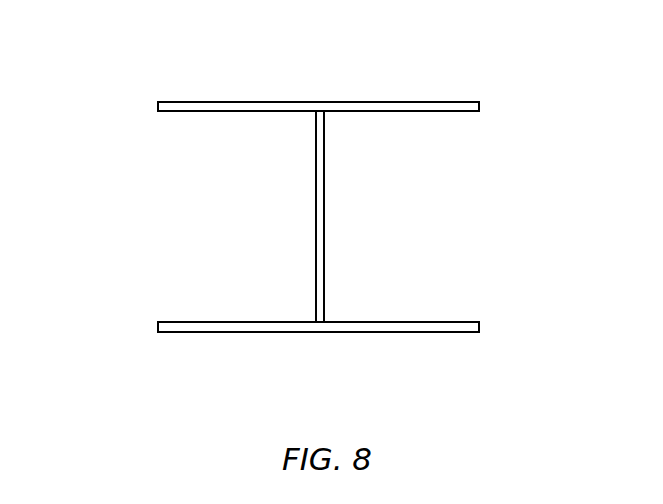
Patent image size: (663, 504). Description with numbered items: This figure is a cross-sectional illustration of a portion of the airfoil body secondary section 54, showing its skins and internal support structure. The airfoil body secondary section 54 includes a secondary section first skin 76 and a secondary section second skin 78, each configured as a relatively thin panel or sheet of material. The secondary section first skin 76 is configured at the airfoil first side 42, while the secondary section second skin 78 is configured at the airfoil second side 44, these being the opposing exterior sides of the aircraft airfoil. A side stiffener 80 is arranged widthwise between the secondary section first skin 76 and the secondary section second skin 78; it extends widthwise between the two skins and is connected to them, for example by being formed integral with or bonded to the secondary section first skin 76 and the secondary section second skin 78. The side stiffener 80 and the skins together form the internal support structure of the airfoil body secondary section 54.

The airfoil body secondary section 54 is at (122, 142).
The airfoil second side 44 is at (273, 101).
The secondary section second skin 78 is at (413, 98).
The side stiffener 80 is at (326, 214).
The airfoil first side 42 is at (254, 332).
The secondary section first skin 76 is at (375, 340).